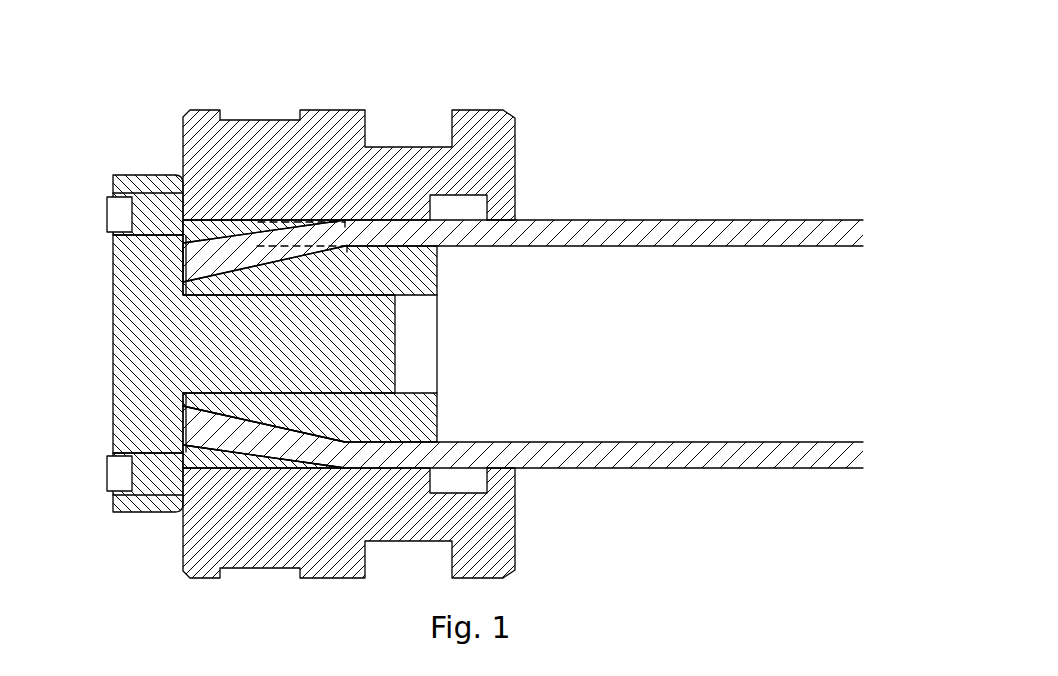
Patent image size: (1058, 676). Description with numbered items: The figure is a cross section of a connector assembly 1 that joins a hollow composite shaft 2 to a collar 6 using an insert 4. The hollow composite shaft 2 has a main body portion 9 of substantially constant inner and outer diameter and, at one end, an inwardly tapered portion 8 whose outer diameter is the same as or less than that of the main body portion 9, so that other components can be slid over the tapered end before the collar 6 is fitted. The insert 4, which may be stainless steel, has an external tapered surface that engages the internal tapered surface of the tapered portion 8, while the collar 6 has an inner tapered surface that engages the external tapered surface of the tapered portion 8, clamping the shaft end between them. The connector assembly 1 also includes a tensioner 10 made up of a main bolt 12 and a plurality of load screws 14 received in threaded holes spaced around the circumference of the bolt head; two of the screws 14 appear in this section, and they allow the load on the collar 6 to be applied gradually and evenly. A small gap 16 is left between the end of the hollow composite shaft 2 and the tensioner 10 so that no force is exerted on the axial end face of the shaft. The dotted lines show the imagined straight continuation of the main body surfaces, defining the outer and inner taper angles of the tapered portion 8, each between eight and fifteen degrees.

The connector assembly 1 is at (593, 78).
The hollow composite shaft 2 is at (459, 222).
The insert 4 is at (397, 423).
The collar 6 is at (284, 537).
The tapered portion 8 is at (243, 428).
The main body portion 9 is at (523, 528).
The tensioner 10 is at (90, 525).
The main bolt 12 is at (124, 357).
The screws 14 is at (112, 192).
The gap 16 is at (183, 268).